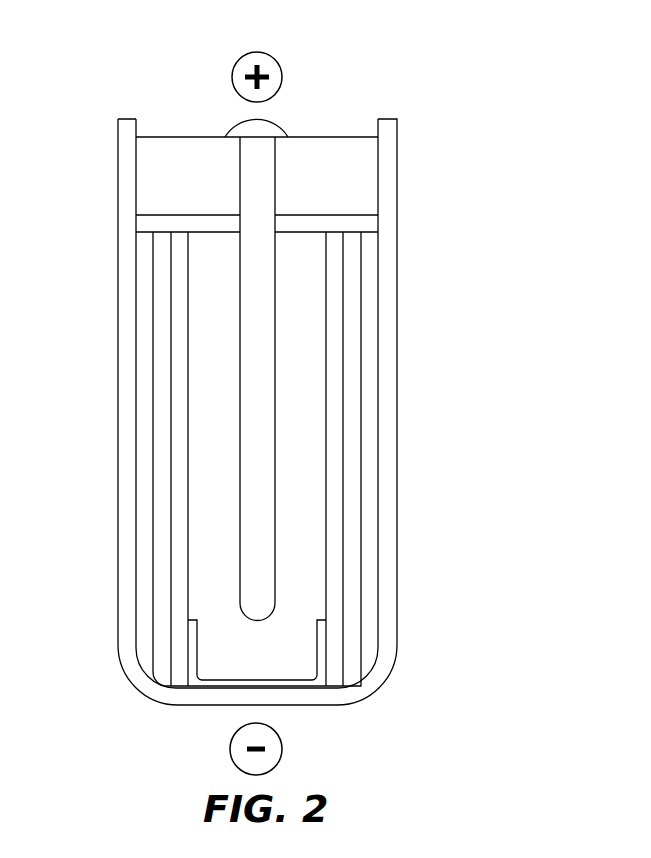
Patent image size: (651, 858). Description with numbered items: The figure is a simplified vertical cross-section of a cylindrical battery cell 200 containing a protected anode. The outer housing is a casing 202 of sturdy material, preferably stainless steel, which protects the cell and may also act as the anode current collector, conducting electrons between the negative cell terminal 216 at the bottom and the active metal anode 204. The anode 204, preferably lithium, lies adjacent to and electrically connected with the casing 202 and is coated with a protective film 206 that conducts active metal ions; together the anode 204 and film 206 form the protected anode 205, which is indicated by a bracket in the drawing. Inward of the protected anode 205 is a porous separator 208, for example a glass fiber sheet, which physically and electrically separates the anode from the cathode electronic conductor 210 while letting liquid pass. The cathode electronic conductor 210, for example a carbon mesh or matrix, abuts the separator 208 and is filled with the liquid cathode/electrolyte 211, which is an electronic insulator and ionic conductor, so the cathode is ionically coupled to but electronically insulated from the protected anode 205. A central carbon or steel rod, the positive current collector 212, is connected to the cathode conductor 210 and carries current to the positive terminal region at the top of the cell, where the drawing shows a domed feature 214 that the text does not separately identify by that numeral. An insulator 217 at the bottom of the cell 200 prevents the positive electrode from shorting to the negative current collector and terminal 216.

The cell 200 is at (497, 101).
The casing 202 is at (388, 362).
The active metal anode 204 is at (365, 330).
The protected anode 205 is at (512, 208).
The protective film 206 is at (352, 292).
The porous separator 208 is at (333, 258).
The cathode electronic conductor 210 is at (308, 438).
The liquid cathode/electrolyte 211 is at (308, 503).
The positive current collector 212 is at (248, 407).
The positive terminal cap 214 is at (268, 122).
The negative cell terminal 216 is at (257, 705).
The insulator 217 is at (313, 680).